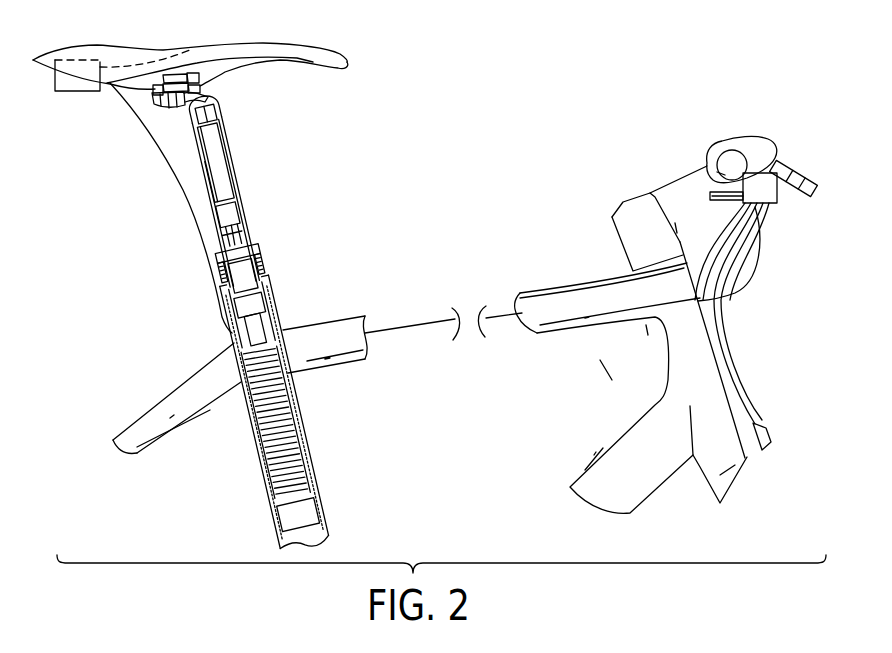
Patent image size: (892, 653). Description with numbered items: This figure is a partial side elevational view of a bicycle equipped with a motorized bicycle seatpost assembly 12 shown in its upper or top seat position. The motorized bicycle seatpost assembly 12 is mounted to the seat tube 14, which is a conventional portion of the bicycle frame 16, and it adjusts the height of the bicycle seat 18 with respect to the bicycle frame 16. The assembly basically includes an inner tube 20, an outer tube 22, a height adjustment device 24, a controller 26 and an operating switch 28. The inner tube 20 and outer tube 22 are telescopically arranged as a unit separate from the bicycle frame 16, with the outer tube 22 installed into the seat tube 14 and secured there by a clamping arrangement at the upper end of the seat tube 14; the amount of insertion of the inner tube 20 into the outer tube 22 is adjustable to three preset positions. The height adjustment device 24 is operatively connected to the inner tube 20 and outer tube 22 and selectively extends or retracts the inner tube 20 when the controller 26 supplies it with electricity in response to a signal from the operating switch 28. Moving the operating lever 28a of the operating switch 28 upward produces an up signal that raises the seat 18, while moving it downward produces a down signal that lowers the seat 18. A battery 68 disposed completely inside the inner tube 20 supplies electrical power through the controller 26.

The motorized bicycle seatpost assembly 12 is at (145, 198).
The seat tube 14 is at (293, 532).
The bicycle frame 16 is at (331, 320).
The bicycle seat 18 is at (226, 46).
The inner tube 20 is at (237, 181).
The outer tube 22 is at (299, 505).
The height adjustment device 24 is at (264, 294).
The controller 26 is at (72, 93).
The operating switch 28 is at (770, 219).
The operating lever 28a is at (710, 194).
The battery 68 is at (211, 152).